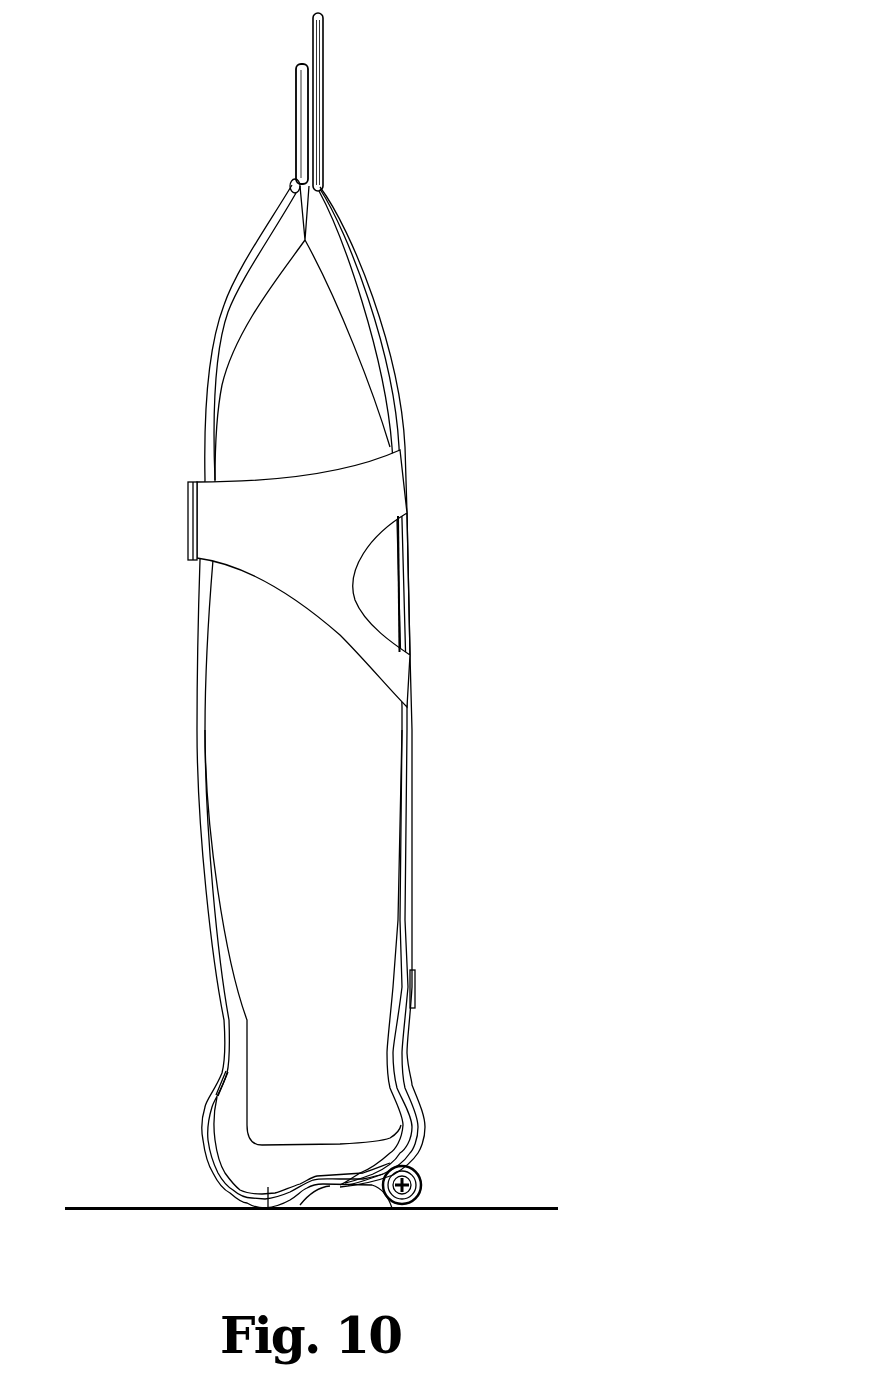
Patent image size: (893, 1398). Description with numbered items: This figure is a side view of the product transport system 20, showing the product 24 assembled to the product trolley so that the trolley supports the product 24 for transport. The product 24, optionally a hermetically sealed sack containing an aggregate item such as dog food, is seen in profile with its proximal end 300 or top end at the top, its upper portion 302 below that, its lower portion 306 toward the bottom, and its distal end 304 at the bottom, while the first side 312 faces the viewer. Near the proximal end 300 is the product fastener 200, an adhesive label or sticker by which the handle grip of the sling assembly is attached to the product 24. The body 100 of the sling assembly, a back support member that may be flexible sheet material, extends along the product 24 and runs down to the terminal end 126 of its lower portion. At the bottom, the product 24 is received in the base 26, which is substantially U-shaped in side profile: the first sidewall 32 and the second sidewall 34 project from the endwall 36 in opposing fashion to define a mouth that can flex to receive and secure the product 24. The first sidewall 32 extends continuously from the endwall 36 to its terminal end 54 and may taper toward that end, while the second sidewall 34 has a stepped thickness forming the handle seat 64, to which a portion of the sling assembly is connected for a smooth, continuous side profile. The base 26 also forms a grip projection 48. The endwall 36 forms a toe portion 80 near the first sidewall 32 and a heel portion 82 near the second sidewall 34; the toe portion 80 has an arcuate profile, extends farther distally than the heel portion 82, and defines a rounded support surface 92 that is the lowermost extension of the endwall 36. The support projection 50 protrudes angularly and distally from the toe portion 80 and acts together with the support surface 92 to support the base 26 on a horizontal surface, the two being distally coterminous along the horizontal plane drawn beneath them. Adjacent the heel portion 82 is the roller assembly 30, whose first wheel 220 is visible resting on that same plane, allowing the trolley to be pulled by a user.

The product transport system 20 is at (138, 148).
The product 24 is at (224, 285).
The base 26 is at (183, 1135).
The roller assembly 30 is at (440, 1170).
The first sidewall 32 is at (215, 1092).
The second sidewall 34 is at (420, 1102).
The endwall 36 is at (305, 1190).
The grip projection 48 is at (413, 1063).
The support projection 50 is at (236, 1210).
The terminal end 54 is at (227, 1070).
The handle seat 64 is at (432, 981).
The toe portion 80 is at (208, 1173).
The heel portion 82 is at (343, 1187).
The support surface 92 is at (283, 1208).
The body 100 is at (440, 779).
The terminal end 126 is at (405, 1012).
The product fastener 200 is at (297, 102).
The first wheel 220 is at (423, 1195).
The proximal end 300 is at (307, 63).
The upper portion 302 is at (340, 309).
The distal end 304 is at (260, 1209).
The lower portion 306 is at (368, 953).
The first side 312 is at (335, 795).